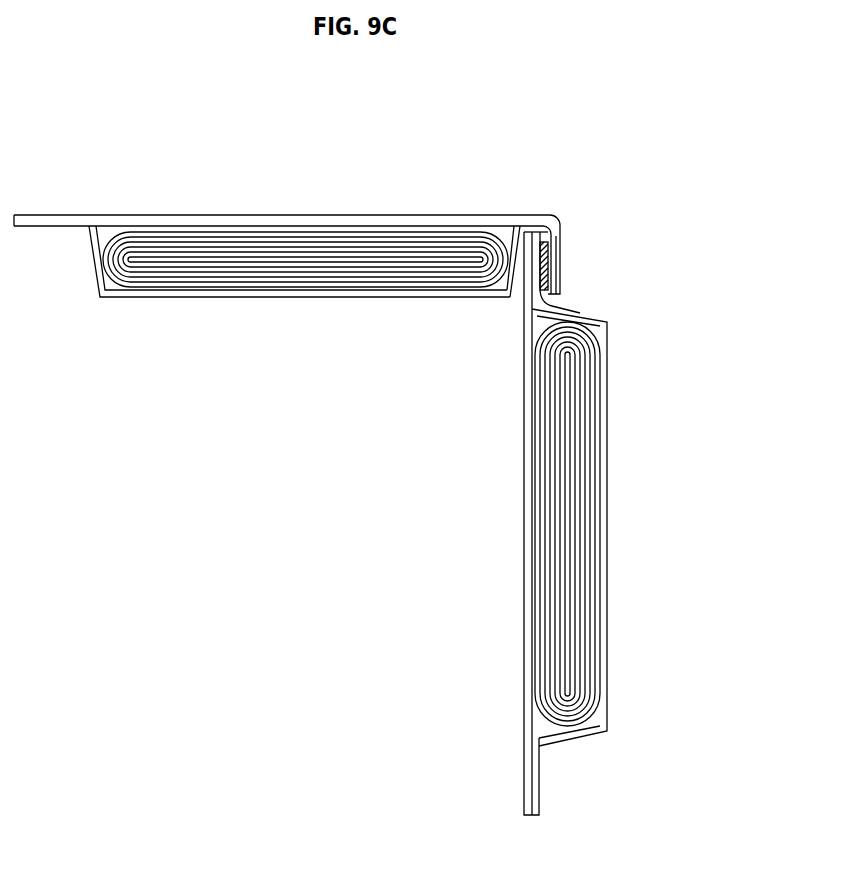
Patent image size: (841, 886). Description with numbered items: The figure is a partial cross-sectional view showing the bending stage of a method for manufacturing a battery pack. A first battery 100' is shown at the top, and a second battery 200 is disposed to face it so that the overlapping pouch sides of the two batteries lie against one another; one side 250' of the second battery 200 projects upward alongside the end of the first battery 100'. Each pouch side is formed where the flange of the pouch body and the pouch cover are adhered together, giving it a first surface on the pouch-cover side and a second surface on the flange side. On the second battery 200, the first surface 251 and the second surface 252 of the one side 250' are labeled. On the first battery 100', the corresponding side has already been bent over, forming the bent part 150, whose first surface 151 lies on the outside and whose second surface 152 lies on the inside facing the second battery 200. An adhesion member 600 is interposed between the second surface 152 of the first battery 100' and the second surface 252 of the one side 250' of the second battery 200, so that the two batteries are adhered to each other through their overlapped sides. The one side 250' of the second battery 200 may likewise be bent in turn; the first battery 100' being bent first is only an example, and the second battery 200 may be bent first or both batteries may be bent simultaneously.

The first battery 100' is at (287, 297).
The second battery 200 is at (506, 535).
The one side of the second battery 250' is at (529, 203).
The first surface of the bent part of the second battery 251 is at (512, 237).
The second surface of the second battery 252 is at (553, 237).
The bent part 150 is at (625, 248).
The first surface 151 is at (562, 245).
The second surface 152 is at (555, 283).
The adhesion member 600 is at (545, 300).